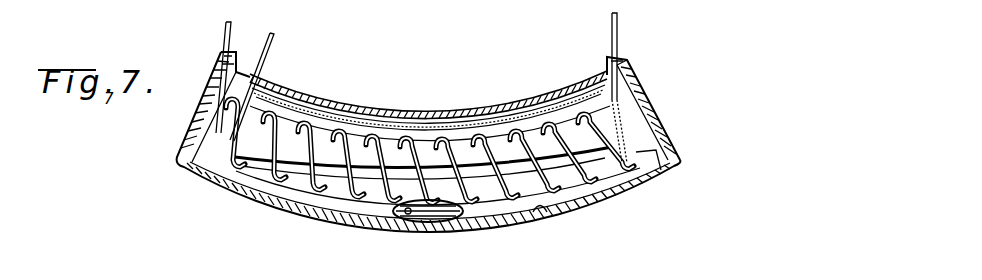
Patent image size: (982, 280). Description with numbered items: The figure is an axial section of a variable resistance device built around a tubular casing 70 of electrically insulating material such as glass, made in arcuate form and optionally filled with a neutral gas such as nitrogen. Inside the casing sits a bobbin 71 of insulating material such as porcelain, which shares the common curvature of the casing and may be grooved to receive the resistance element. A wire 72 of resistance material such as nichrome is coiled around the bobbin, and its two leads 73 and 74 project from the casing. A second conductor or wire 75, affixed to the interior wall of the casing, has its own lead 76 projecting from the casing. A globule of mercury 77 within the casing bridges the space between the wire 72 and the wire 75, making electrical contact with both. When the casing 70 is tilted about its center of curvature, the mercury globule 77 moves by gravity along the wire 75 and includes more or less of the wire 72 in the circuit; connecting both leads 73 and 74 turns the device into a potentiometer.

The tubular casing 70 is at (418, 112).
The bobbin 71 is at (433, 157).
The wire 72 is at (518, 122).
The lead 73 is at (283, 49).
The lead 74 is at (612, 33).
The second conductor 75 is at (534, 213).
The lead 76 is at (226, 36).
The globule of mercury 77 is at (386, 226).